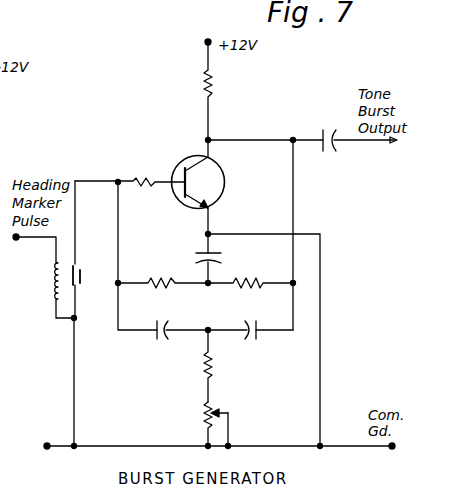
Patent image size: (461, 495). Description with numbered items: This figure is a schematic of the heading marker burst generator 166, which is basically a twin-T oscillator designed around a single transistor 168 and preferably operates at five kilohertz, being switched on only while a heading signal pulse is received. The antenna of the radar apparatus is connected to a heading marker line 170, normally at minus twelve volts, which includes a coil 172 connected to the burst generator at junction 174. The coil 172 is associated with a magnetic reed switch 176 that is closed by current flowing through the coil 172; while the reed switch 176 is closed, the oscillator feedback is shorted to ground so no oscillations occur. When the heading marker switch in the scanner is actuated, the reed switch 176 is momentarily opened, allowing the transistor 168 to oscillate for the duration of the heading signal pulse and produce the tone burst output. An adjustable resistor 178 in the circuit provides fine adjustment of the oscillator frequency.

The heading marker burst generator 166 is at (153, 82).
The transistor 168 is at (227, 192).
The heading marker line 170 is at (56, 245).
The coil 172 is at (55, 293).
The junction 174 is at (74, 320).
The magnetic reed switch 176 is at (77, 264).
The adjustable resistor 178 is at (197, 412).